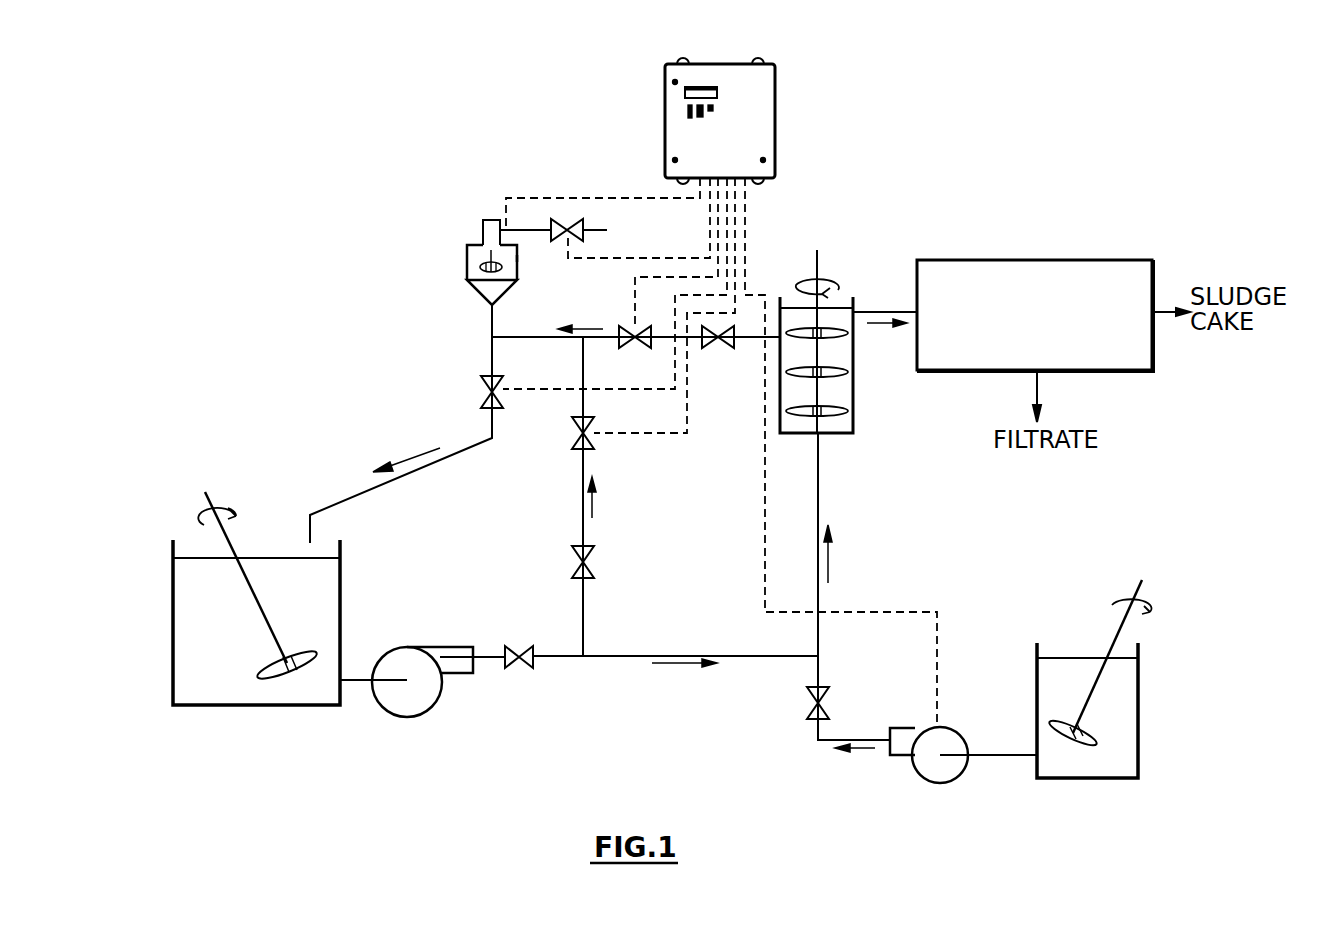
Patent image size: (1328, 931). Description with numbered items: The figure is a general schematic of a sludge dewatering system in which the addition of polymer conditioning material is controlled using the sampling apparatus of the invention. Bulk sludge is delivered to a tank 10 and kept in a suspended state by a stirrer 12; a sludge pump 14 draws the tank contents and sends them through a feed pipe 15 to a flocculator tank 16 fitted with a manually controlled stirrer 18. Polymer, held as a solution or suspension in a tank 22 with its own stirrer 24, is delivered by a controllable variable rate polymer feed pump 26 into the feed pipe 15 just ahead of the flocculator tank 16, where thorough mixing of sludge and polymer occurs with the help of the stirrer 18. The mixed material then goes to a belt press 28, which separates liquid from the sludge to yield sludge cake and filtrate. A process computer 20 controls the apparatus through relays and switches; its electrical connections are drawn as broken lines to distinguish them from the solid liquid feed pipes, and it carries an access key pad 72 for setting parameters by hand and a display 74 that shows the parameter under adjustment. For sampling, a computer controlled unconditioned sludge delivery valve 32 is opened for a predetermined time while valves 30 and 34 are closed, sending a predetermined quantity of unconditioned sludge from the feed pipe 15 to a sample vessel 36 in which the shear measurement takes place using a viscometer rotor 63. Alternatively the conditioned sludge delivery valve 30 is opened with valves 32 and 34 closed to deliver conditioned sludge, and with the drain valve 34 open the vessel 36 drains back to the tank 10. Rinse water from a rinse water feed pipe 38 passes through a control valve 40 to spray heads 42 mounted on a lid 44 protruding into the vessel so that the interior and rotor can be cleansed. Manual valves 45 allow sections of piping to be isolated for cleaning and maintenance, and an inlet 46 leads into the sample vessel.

The tank 10 is at (342, 588).
The stirrer 12 is at (232, 540).
The sludge pump 14 is at (435, 712).
The feed pipe 15 is at (610, 657).
The flocculator tank 16 is at (853, 408).
The manually controlled stirrer 18 is at (818, 262).
The process computer 20 is at (780, 120).
The tank 22 is at (1140, 713).
The stirrer 24 is at (1112, 642).
The polymer feed pump 26 is at (918, 778).
The belt press 28 is at (985, 260).
The conditioned sludge delivery valve 30 is at (630, 327).
The unconditioned sludge delivery valve 32 is at (594, 443).
The drain valve 34 is at (488, 397).
The sample vessel 36 is at (465, 282).
The rinse water feed pipe 38 is at (592, 226).
The control valve 40 is at (553, 220).
The spray heads 42 is at (519, 257).
The lid 44 is at (477, 241).
The manual valves 45 is at (720, 347).
The measuring vessel inlet pipe 46 is at (483, 222).
The viscometer rotor 63 is at (480, 267).
The access key pad 72 is at (687, 112).
The display 74 is at (685, 92).